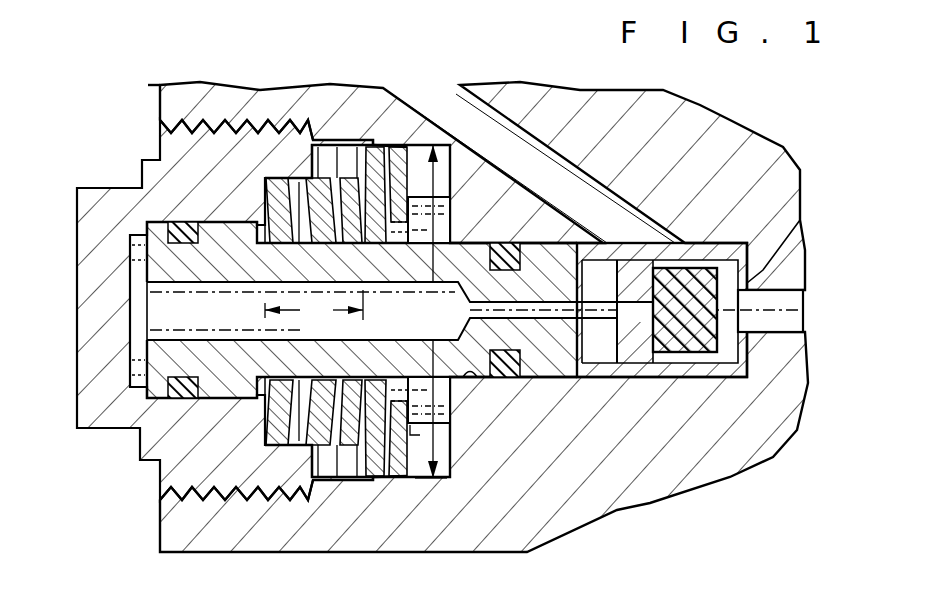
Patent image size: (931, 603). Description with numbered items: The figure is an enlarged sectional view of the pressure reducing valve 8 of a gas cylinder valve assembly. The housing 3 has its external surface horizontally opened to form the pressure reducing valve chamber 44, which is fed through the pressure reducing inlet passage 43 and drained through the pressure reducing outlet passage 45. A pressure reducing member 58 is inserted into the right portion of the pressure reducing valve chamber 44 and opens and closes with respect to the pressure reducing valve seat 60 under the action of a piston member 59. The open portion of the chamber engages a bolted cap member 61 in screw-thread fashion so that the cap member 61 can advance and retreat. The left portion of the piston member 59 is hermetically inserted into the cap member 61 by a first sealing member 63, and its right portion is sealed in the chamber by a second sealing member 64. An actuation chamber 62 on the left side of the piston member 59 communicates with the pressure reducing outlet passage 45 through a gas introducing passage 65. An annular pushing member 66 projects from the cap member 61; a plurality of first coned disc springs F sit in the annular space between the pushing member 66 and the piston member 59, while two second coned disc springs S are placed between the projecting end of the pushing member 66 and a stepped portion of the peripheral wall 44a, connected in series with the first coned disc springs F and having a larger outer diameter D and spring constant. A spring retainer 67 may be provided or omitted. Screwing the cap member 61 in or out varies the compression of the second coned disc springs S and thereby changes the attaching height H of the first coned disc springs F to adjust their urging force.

The housing 3 is at (720, 125).
The pressure reducing valve 8 is at (609, 402).
The pressure reducing inlet passage 43 is at (770, 380).
The pressure reducing valve chamber 44 is at (477, 378).
The peripheral wall 44a is at (413, 430).
The pressure reducing outlet passage 45 is at (560, 163).
The pressure reducing member 58 is at (673, 380).
The piston member 59 is at (143, 358).
The pressure reducing valve seat 60 is at (805, 250).
The cap member 61 is at (108, 188).
The actuation chamber 62 is at (130, 252).
The first sealing member 63 is at (183, 377).
The second sealing member 64 is at (505, 380).
The gas introducing passage 65 is at (160, 312).
The pushing member 66 is at (342, 458).
The spring retainer 67 is at (185, 400).
The outer diameter D is at (431, 311).
The attaching height H is at (314, 308).
The second coned disc springs S is at (395, 483).
The first coned disc springs F is at (160, 478).